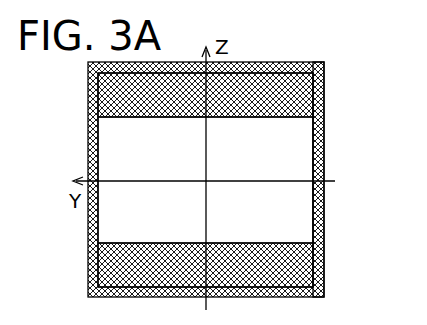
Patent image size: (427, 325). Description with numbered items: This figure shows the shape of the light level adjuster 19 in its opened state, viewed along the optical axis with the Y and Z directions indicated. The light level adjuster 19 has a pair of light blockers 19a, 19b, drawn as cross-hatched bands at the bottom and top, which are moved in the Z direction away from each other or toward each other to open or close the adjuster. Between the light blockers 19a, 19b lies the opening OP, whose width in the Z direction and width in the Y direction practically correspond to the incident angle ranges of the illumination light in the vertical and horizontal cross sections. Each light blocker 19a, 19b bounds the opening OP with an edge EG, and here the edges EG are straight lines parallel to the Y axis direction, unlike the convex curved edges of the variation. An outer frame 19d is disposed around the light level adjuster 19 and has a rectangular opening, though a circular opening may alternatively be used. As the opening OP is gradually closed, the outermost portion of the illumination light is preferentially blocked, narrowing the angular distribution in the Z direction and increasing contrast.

The light level adjuster 19 is at (327, 84).
The light blocker 19a is at (265, 282).
The light blocker 19b is at (241, 84).
The outer frame 19d is at (325, 142).
The opening OP is at (297, 208).
The edge EG is at (238, 117).